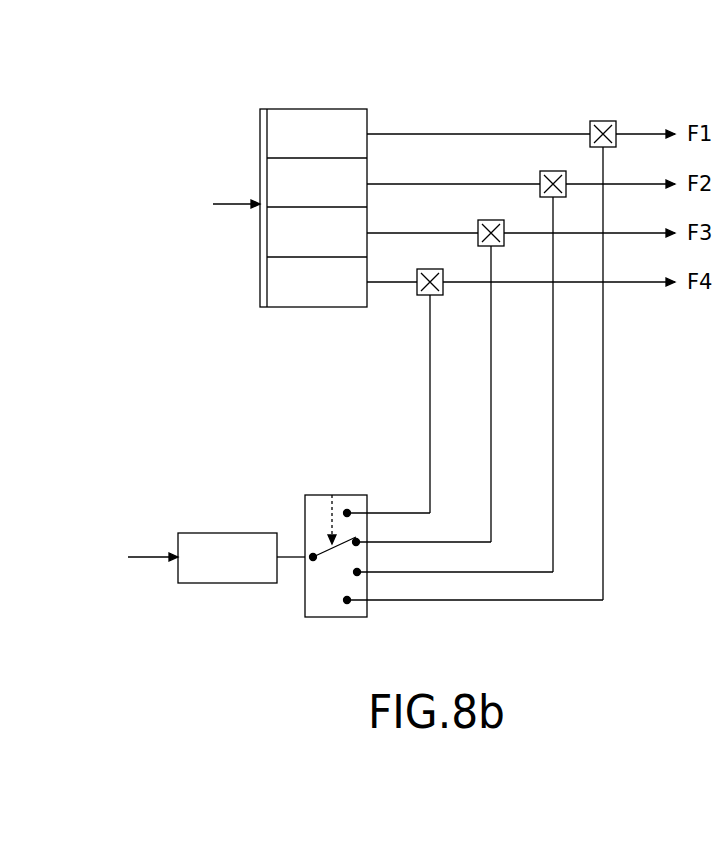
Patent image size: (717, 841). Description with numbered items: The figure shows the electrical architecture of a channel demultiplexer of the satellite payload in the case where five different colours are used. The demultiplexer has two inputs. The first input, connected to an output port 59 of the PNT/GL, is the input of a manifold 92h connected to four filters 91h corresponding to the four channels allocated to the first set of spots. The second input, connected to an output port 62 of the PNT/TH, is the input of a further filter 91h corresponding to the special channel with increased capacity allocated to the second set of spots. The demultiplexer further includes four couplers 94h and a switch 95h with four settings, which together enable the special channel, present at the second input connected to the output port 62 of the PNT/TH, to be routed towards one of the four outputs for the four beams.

The filters 91h is at (307, 108).
The manifold 92h is at (260, 158).
The couplers 94h is at (602, 122).
The switch 95h is at (347, 495).
The output port 59 is at (220, 207).
The output port 62 is at (142, 557).